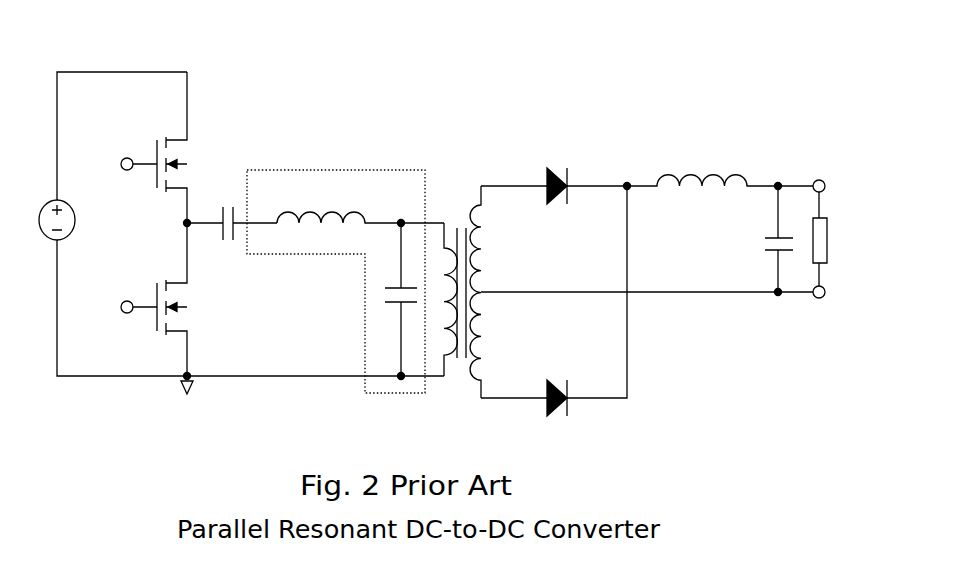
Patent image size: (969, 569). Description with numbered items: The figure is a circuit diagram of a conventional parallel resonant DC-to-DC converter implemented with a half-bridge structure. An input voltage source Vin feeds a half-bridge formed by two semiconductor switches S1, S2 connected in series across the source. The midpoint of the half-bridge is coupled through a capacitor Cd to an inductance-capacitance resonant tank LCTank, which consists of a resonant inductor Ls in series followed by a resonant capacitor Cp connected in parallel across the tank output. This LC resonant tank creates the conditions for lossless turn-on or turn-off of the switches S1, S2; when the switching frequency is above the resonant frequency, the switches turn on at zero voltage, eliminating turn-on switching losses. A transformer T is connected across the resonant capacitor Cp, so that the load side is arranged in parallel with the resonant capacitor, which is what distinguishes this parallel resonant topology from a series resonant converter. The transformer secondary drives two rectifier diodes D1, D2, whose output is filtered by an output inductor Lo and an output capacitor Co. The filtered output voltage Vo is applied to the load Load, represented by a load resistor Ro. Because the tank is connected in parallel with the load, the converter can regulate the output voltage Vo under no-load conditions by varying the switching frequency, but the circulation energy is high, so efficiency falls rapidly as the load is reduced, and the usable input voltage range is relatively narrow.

The input voltage source Vin is at (113, 202).
The semiconductor switch S1 is at (154, 147).
The semiconductor switch S2 is at (154, 299).
The capacitor Cd is at (232, 206).
The LC resonant tank LCTank is at (315, 118).
The resonant inductor Ls is at (360, 196).
The resonant capacitor Cp is at (406, 300).
The transformer T is at (611, 292).
The rectifier diode D1 is at (554, 198).
The rectifier diode D2 is at (554, 322).
The output inductor Lo is at (720, 201).
The output capacitor Co is at (774, 239).
The load resistor Ro is at (840, 239).
The load Load is at (808, 216).
The output voltage Vo is at (868, 186).